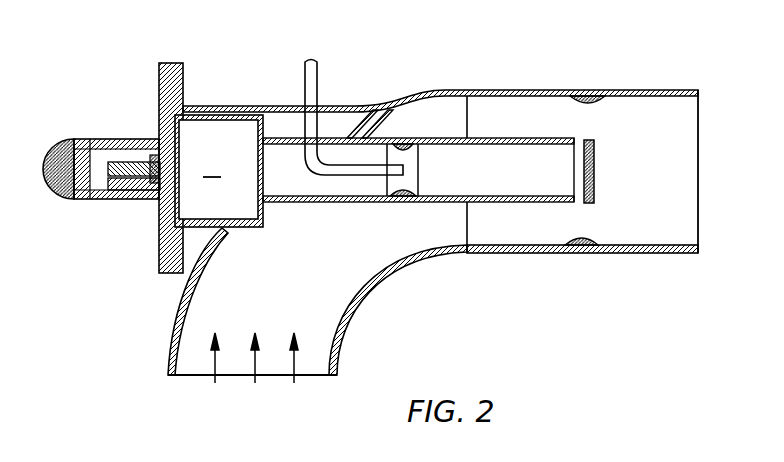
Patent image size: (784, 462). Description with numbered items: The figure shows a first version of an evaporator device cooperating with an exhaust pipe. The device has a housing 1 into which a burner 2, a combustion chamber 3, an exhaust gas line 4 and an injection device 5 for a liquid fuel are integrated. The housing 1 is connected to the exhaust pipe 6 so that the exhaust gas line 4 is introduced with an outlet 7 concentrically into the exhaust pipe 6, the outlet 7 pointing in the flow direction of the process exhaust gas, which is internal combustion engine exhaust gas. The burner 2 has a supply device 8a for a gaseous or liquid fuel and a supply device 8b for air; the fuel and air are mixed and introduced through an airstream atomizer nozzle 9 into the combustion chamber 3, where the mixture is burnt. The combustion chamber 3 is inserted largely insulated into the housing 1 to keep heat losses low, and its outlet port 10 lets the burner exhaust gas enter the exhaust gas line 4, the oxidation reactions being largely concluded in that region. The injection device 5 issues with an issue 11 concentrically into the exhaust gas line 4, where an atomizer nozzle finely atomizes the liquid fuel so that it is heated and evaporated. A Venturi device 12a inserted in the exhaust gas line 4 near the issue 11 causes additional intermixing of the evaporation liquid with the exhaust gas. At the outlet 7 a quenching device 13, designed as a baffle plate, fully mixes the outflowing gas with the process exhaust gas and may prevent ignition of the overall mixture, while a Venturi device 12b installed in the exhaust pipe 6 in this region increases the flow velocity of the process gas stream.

The housing 1 is at (229, 101).
The burner 2 is at (132, 139).
The combustion chamber 3 is at (219, 171).
The exhaust gas line 4 is at (483, 138).
The injection device 5 is at (322, 98).
The exhaust pipe 6 is at (383, 283).
The outlet 7 is at (583, 138).
The supply device for fuel 8a is at (90, 139).
The supply device for air 8b is at (108, 199).
The airstream atomizer nozzle 9 is at (153, 138).
The outlet port 10 is at (272, 133).
The issue 11 is at (433, 138).
The Venturi device 12a is at (409, 202).
The Venturi device 12b is at (578, 246).
The quenching device 13 is at (594, 183).